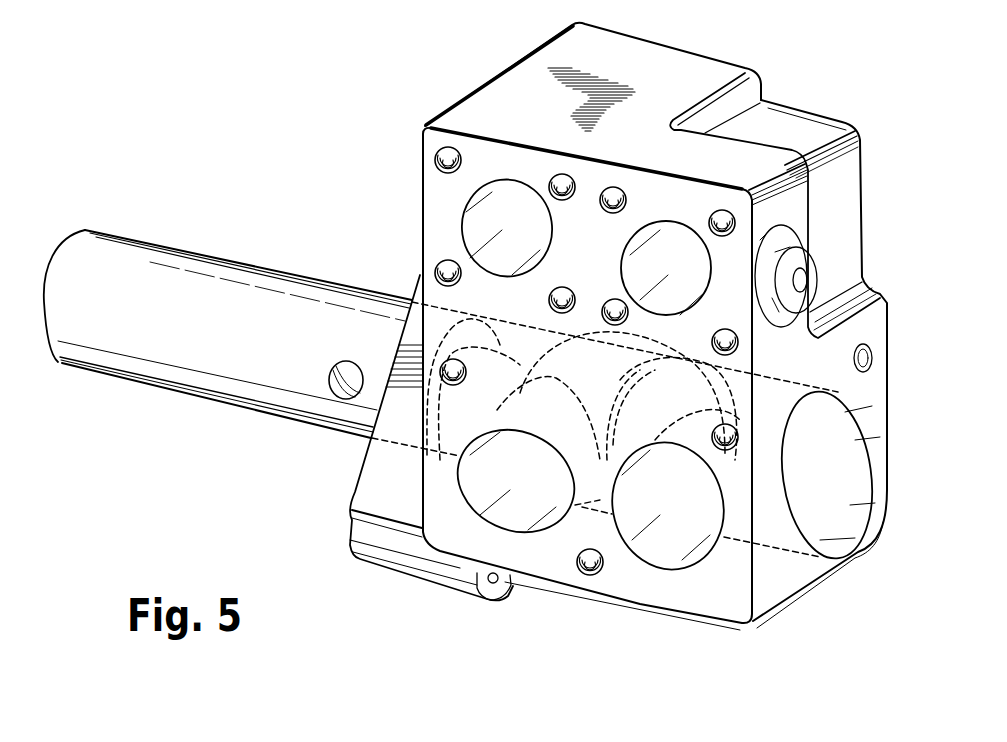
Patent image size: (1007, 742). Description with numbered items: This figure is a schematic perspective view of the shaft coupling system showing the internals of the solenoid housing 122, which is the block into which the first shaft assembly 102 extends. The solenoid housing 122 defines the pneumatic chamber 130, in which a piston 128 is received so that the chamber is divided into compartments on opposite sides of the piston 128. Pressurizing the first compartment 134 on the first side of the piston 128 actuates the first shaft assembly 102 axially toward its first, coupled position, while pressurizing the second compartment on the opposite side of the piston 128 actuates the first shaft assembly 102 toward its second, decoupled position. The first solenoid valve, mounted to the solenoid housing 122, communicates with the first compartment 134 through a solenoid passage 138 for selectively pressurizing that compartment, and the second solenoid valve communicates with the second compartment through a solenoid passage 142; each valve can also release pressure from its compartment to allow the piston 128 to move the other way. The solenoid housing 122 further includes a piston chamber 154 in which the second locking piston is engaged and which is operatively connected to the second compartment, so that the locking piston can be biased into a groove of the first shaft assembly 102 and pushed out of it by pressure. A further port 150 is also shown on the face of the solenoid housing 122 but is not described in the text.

The first shaft assembly 102 is at (236, 278).
The solenoid housing 122 is at (537, 68).
The piston 128 is at (620, 375).
The pneumatic chamber 130 is at (592, 510).
The first compartment 134 is at (563, 362).
The solenoid passage 138 is at (513, 205).
The solenoid passage 142 is at (672, 240).
The port 150 is at (503, 490).
The piston chamber 154 is at (682, 525).